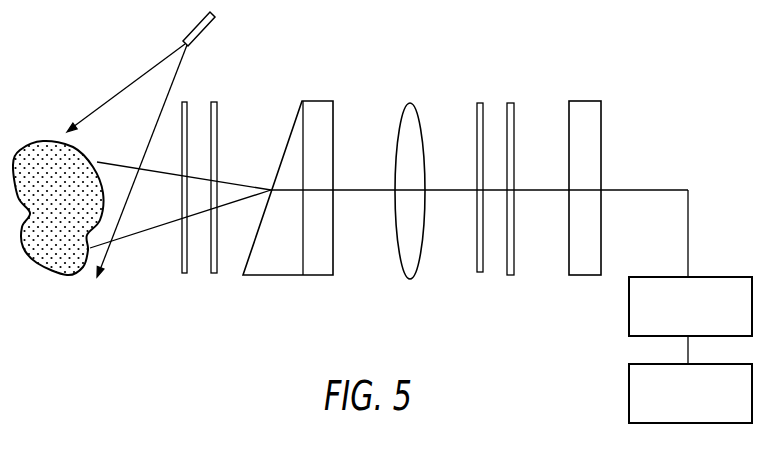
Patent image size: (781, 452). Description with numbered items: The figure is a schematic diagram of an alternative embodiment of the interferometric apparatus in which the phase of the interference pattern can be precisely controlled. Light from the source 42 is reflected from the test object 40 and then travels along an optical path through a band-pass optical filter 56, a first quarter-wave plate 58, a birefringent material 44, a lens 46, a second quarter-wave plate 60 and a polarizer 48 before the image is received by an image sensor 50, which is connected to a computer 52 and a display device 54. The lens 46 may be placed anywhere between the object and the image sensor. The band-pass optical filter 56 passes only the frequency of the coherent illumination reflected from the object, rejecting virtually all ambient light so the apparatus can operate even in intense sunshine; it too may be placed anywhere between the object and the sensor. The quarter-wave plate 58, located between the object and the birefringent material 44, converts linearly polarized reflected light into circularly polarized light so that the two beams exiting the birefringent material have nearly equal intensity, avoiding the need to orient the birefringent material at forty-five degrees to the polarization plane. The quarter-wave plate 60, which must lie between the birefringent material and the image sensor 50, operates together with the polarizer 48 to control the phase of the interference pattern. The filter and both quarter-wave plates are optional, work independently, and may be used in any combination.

The test object 40 is at (47, 153).
The source 42 is at (215, 17).
The birefringent material 44 is at (290, 262).
The lens 46 is at (401, 266).
The polarizer 48 is at (514, 274).
The image sensor 50 is at (569, 272).
The computer 52 is at (676, 323).
The display device 54 is at (676, 409).
The band-pass optical filter 56 is at (183, 274).
The quarter-wave plate 58 is at (217, 274).
The quarter-wave plate 60 is at (477, 272).